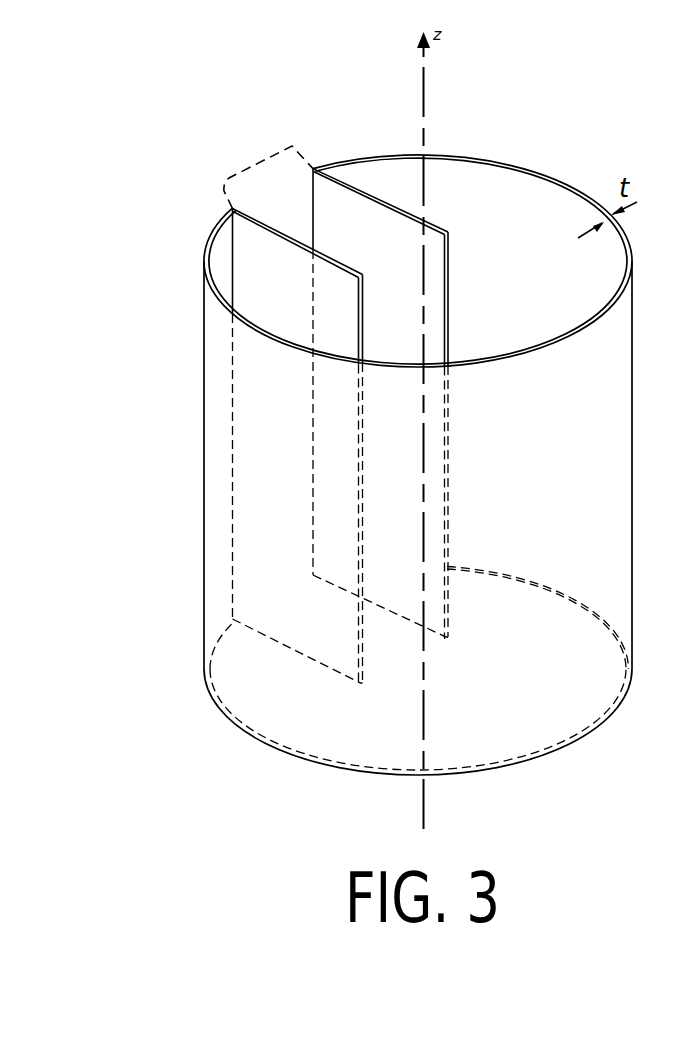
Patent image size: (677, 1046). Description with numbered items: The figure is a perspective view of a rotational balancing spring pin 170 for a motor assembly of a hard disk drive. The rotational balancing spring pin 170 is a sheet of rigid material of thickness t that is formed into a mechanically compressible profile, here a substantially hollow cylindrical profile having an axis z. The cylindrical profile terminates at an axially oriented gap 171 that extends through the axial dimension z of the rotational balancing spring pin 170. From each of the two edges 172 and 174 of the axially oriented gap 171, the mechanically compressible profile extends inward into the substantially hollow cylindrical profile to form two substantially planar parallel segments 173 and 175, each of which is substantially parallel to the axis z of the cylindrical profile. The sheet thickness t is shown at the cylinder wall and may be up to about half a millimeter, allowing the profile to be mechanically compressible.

The rotational balancing spring pin 170 is at (222, 50).
The axially oriented gap 171 is at (264, 166).
The edge 172 is at (233, 363).
The substantially planar parallel segment 173 is at (307, 288).
The edge 174 is at (313, 407).
The substantially planar parallel segment 175 is at (394, 244).